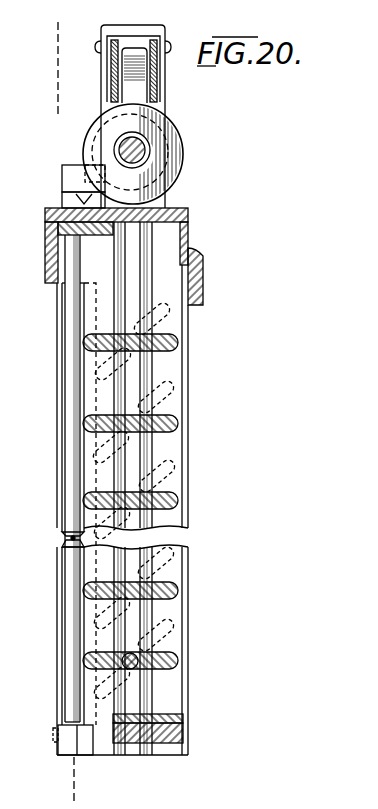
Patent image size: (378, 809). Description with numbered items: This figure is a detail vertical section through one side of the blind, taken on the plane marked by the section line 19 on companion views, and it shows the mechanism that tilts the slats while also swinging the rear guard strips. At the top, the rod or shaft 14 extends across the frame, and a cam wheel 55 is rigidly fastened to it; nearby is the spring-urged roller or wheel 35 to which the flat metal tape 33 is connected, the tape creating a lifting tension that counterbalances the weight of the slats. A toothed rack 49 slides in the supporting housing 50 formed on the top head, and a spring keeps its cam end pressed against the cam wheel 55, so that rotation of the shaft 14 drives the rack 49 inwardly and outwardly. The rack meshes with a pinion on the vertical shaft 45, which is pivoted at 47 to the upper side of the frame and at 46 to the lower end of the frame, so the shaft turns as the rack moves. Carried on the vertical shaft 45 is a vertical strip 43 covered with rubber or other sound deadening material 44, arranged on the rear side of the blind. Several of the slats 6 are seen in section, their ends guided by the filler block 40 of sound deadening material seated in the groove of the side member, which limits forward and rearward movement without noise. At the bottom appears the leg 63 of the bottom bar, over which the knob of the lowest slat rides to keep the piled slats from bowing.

The section line 19— 19 is at (74, 34).
The flat metal tape 33 is at (127, 83).
The roller or wheel 35 is at (150, 88).
The rod or shaft 14 is at (145, 150).
The cam wheel 55 is at (170, 175).
The toothed rack 49 is at (87, 168).
The supporting housing 50 is at (63, 170).
The upper pivot 47 is at (58, 210).
The vertical shaft 45 is at (72, 282).
The slat 6 is at (172, 315).
The filler block 40 is at (147, 370).
The vertical strip 43 is at (72, 437).
The sound deadening material 44 is at (65, 498).
The leg 63 is at (183, 718).
The lower pivot 46 is at (57, 732).